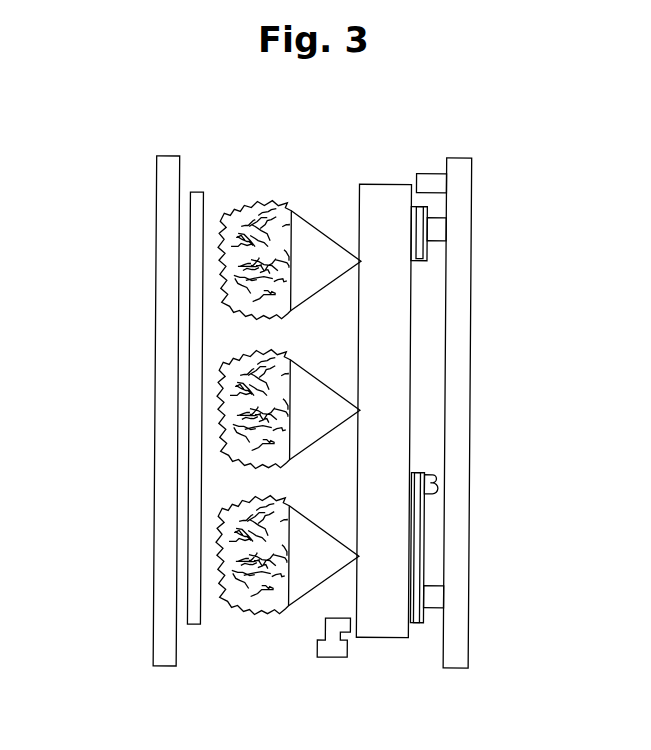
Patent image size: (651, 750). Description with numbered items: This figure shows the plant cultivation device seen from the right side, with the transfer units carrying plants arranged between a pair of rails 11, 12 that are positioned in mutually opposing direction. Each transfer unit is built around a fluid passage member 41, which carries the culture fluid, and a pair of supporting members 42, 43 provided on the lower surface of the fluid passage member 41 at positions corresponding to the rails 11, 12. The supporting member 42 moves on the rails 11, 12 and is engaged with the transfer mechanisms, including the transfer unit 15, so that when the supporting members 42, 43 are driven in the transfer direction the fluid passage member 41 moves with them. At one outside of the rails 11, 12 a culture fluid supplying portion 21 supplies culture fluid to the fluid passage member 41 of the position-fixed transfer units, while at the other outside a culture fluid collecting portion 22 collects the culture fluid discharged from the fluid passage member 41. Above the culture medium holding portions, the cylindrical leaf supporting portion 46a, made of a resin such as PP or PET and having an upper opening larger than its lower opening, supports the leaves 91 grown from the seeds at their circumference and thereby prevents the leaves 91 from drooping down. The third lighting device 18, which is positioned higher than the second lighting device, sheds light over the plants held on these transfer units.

The rail 11 is at (438, 597).
The rail 12 is at (440, 228).
The transfer unit 15 is at (436, 482).
The third lighting device 18 is at (190, 259).
The culture fluid supplying portion 21 is at (335, 658).
The culture fluid collecting portion 22 is at (440, 182).
The fluid passage member 41 is at (380, 637).
The supporting member 42 is at (425, 519).
The supporting member 43 is at (425, 250).
The leaf supporting portion 46a is at (310, 218).
The leaves 91 is at (247, 205).